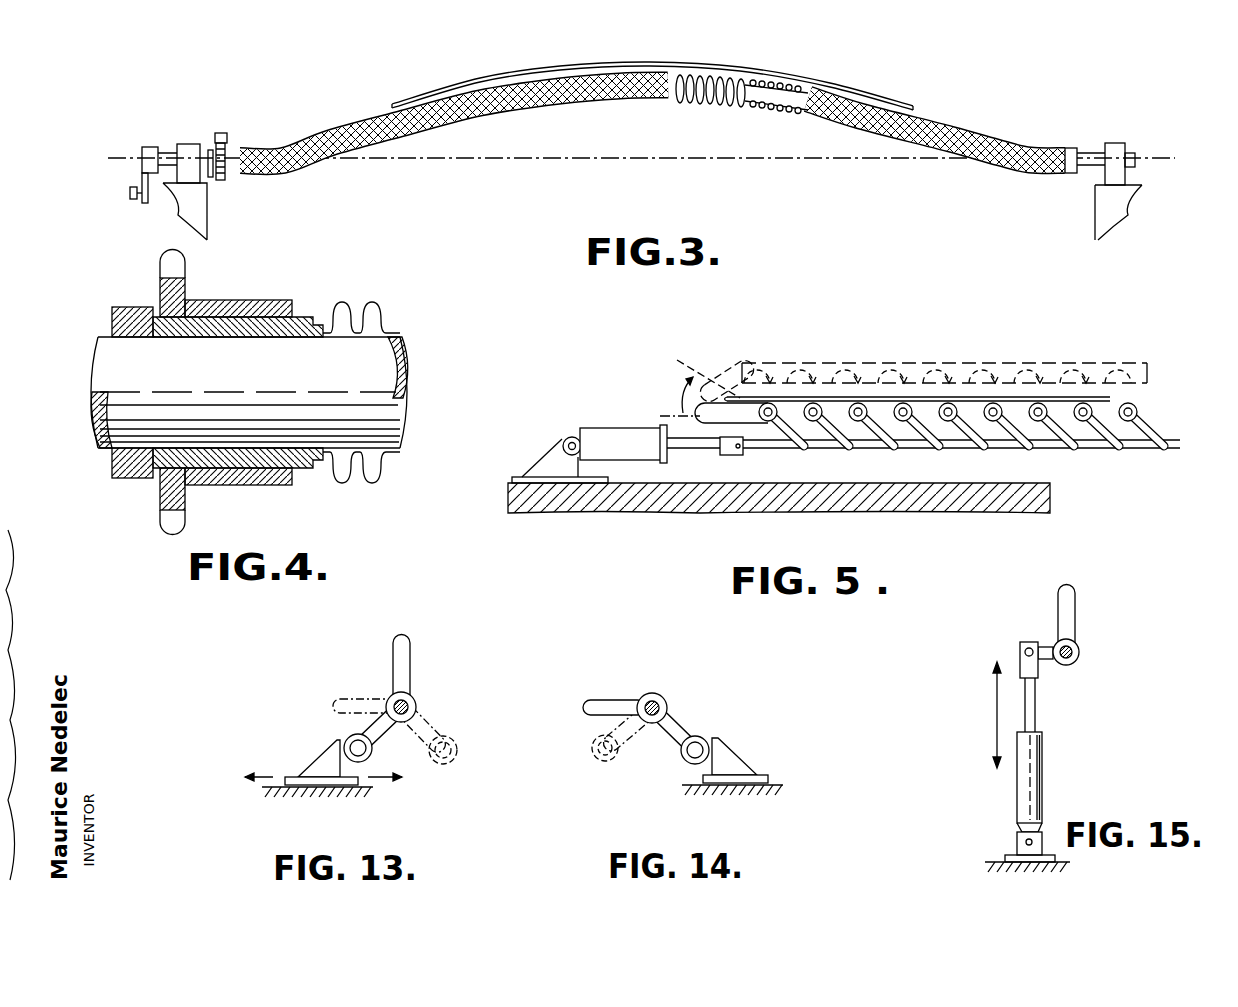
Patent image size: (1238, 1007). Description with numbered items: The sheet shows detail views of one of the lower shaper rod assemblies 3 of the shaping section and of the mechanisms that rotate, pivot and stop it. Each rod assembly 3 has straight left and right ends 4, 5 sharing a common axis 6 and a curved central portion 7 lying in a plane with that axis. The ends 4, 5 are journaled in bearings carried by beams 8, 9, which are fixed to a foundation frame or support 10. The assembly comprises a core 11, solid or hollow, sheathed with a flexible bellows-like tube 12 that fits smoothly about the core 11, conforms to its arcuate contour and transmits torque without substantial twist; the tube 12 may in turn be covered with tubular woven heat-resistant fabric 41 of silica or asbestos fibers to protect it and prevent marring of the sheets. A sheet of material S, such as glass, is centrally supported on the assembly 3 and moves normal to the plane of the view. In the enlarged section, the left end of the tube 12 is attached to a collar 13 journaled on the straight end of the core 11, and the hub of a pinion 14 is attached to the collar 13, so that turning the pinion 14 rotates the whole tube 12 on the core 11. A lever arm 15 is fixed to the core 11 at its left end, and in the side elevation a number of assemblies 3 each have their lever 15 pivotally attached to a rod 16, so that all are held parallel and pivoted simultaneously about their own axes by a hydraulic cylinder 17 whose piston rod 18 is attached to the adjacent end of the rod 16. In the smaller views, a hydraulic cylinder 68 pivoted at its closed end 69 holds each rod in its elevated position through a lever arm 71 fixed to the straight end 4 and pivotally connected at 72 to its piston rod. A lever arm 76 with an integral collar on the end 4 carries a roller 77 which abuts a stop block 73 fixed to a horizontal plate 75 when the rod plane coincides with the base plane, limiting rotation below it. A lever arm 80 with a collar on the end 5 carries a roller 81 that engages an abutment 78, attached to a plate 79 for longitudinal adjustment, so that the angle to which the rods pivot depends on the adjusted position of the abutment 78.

In FIG. 3, the arcuately curved rod assembly 3 is at (834, 76).
In FIG. 13, the arcuately curved rod assembly 3 is at (407, 657).
In FIG. 15, the arcuately curved rod assembly 3 is at (1076, 615).
In FIG. 3, the straight left end 4 is at (168, 150).
In FIG. 14, the straight left end 4 is at (656, 699).
In FIG. 15, the straight left end 4 is at (1080, 659).
In FIG. 3, the straight right end 5 is at (1096, 150).
In FIG. 13, the straight right end 5 is at (410, 706).
In FIG. 3, the common axis 6 is at (527, 157).
In FIG. 3, the curved central portion 7 is at (628, 100).
In FIG. 3, the beam 8 is at (187, 180).
In FIG. 5, the beam 8 is at (1110, 420).
In FIG. 3, the beam 9 is at (1121, 173).
In FIG. 3, the foundation frame 10 is at (201, 209).
In FIG. 5, the foundation frame 10 is at (512, 497).
In FIG. 3, the core 11 is at (776, 101).
In FIG. 4, the core 11 is at (393, 410).
In FIG. 3, the flexible bellows-like tube 12 is at (722, 85).
In FIG. 4, the flexible bellows-like tube 12 is at (377, 318).
In FIG. 4, the collar 13 is at (300, 316).
In FIG. 3, the pinion 14 is at (223, 181).
In FIG. 4, the pinion 14 is at (200, 488).
In FIG. 3, the lever arm 15 is at (128, 198).
In FIG. 5, the lever arm 15 is at (978, 447).
In FIG. 5, the rod 16 is at (906, 449).
In FIG. 5, the hydraulic cylinder 17 is at (622, 428).
In FIG. 5, the piston rod 18 is at (688, 450).
In FIG. 3, the tubular woven heat-resistant fabric 41 is at (658, 138).
In FIG. 15, the hydraulic cylinder 68 is at (1043, 771).
In FIG. 15, the pivot 69 is at (1018, 839).
In FIG. 15, the lever arm 71 is at (1045, 661).
In FIG. 15, the pivotal connection 72 is at (1023, 651).
In FIG. 14, the stop block 73 is at (731, 754).
In FIG. 14, the horizontal plate 75 is at (757, 790).
In FIG. 14, the lever arm 76 is at (676, 723).
In FIG. 14, the roller 77 is at (690, 762).
In FIG. 13, the abutment 78 is at (318, 766).
In FIG. 13, the plate 79 is at (343, 790).
In FIG. 13, the lever arm 80 is at (433, 729).
In FIG. 13, the roller 81 is at (348, 741).
In FIG. 3, the sheet of material S is at (660, 71).
In FIG. 5, the sheet of material S is at (766, 362).